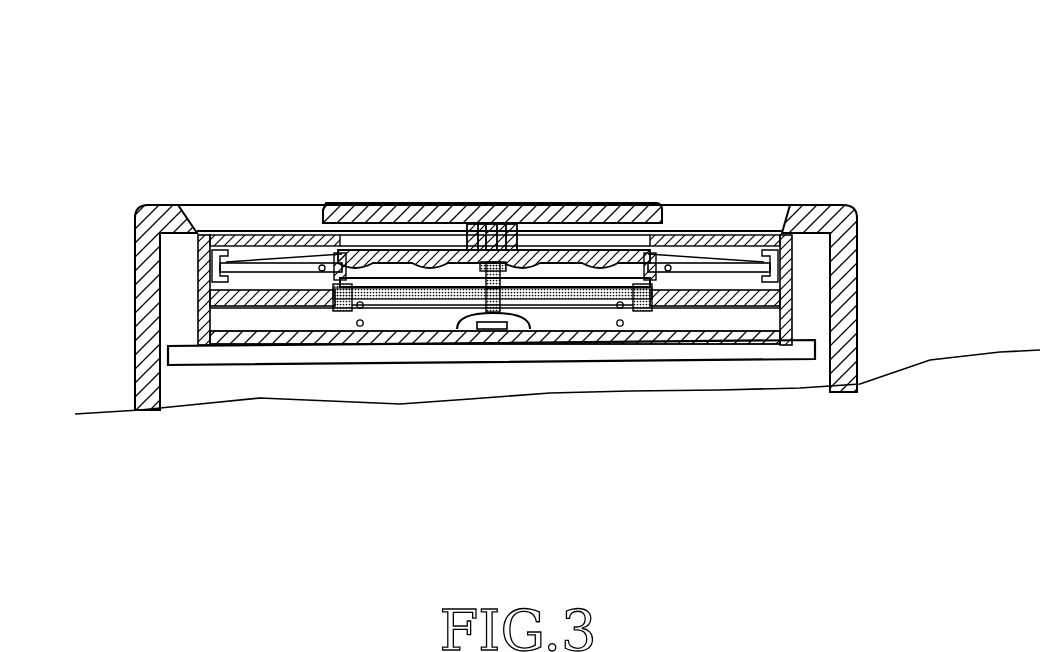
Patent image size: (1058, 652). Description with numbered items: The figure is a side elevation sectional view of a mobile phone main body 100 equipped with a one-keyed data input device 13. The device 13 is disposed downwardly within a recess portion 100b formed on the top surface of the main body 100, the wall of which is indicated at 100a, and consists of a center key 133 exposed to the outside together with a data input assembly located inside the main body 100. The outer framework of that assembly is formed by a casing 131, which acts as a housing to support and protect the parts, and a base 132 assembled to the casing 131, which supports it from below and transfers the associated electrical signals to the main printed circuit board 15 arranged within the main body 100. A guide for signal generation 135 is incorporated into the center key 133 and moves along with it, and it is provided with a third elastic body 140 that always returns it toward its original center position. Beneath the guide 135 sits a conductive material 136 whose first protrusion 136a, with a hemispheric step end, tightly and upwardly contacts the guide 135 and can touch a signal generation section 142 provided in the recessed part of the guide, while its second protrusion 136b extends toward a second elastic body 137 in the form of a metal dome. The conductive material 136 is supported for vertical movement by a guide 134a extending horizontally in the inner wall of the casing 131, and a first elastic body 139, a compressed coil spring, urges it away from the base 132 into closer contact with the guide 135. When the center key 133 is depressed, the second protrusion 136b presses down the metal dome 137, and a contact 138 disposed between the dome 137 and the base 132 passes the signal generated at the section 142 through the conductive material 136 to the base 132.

The main body 100 is at (462, 215).
The upper housing wall 100a is at (160, 204).
The recess portion 100b is at (237, 220).
The one-keyed data input device 13 is at (492, 148).
The casing 131 is at (738, 243).
The base 132 is at (632, 333).
The center key 133 is at (566, 208).
The guide 134a is at (279, 298).
The guide for signal generation 135 is at (382, 251).
The conductive material 136 is at (568, 292).
The first protrusion 136a is at (461, 248).
The second protrusion 136b is at (473, 303).
The second elastic body 137 is at (540, 323).
The contact 138 is at (495, 331).
The first elastic body 139 is at (366, 327).
The third elastic body 140 is at (283, 255).
The signal generation section 142 is at (410, 248).
The main printed circuit board 15 is at (223, 353).